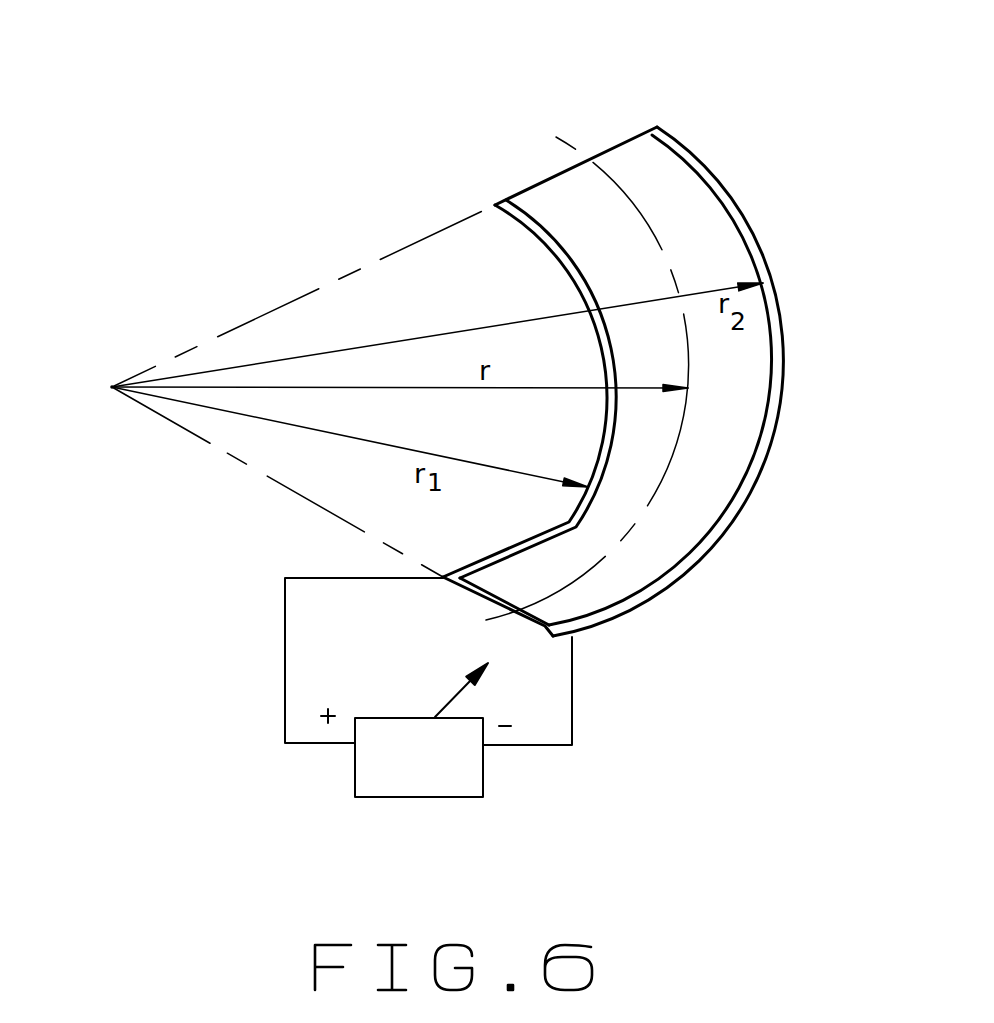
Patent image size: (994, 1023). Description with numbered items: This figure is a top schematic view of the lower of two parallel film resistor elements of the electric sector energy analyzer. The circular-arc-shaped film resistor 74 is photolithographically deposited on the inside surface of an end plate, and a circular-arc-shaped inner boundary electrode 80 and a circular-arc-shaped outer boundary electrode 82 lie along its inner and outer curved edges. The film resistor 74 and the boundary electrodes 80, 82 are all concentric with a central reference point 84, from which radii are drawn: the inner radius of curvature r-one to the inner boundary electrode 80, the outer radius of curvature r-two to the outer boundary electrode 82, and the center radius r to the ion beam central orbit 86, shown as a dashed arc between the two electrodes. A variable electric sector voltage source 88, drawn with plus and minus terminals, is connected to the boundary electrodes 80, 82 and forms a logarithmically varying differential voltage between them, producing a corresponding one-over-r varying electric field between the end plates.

The film resistor 74 is at (687, 208).
The inner boundary electrode 80 is at (518, 222).
The outer boundary electrode 82 is at (784, 347).
The central reference point 84 is at (112, 387).
The ion beam central orbit 86 is at (613, 180).
The variable electric sector voltage source 88 is at (322, 786).